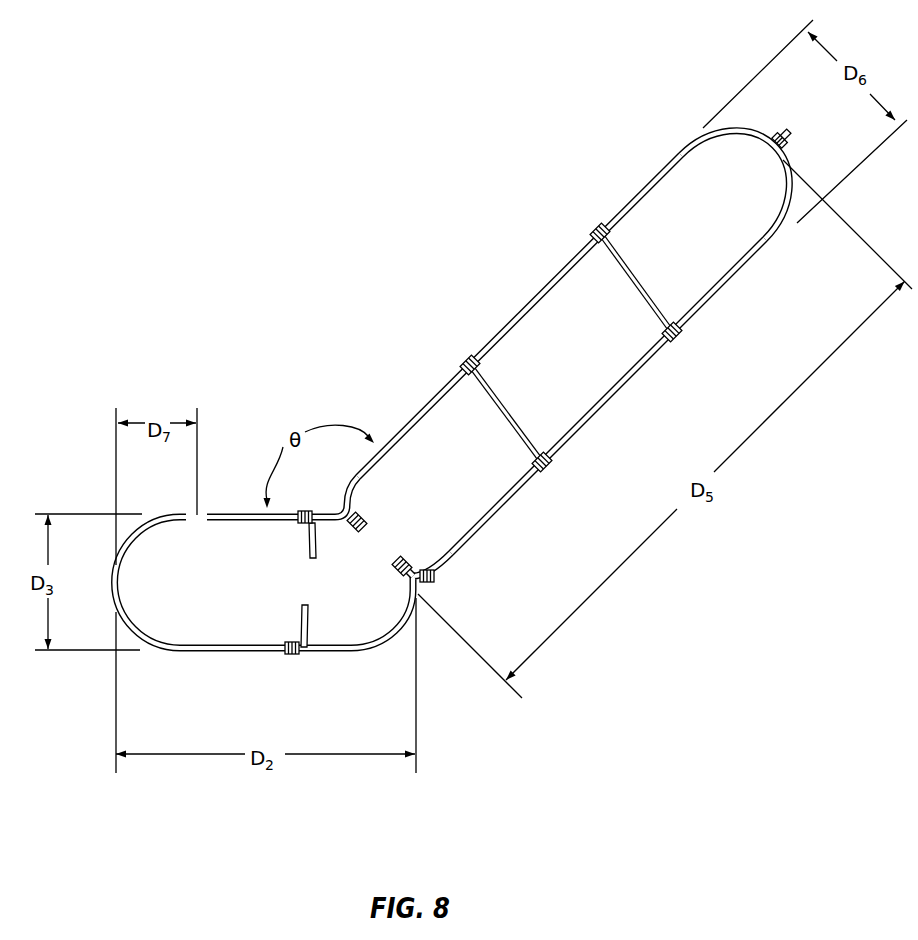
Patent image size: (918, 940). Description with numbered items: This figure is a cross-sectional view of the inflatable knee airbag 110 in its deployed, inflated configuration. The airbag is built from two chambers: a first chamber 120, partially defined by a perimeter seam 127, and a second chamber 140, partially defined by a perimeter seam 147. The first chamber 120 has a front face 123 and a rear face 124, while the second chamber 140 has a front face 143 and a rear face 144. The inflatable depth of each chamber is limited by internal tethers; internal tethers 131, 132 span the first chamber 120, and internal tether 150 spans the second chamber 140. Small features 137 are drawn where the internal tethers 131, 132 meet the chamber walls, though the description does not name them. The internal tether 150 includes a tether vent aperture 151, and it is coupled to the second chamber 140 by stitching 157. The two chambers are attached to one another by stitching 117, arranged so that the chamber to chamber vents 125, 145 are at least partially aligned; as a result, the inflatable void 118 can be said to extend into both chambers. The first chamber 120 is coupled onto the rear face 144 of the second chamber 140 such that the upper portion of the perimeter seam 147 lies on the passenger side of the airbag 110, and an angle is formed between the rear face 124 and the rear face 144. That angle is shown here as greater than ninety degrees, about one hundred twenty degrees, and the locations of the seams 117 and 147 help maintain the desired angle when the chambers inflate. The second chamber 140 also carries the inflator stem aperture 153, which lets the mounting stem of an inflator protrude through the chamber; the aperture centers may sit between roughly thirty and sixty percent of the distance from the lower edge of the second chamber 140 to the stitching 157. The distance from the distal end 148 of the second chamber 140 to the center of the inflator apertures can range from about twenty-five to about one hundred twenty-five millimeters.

The inflatable knee airbag 110 is at (414, 377).
The first chamber 120 is at (439, 317).
The front face of first chamber 123 is at (638, 385).
The rear face of first chamber 124 is at (537, 293).
The perimeter seam 127 is at (774, 132).
The internal tether 131 is at (530, 424).
The internal tether 132 is at (668, 294).
The bushing 137 is at (598, 232).
The inflatable void 118 is at (470, 407).
The stitching 117 is at (350, 525).
The second chamber 140 is at (304, 530).
The front face of second chamber 143 is at (175, 650).
The rear face of second chamber 144 is at (233, 515).
The chamber to chamber vent 145 is at (525, 524).
The chamber to chamber vent 125 is at (380, 540).
The perimeter seam 147 is at (435, 597).
The distal end of second chamber 148 is at (120, 583).
The internal tether 150 is at (298, 618).
The tether vent aperture 151 is at (305, 583).
The inflator stem aperture 153 is at (203, 513).
The stitching 157 is at (287, 650).